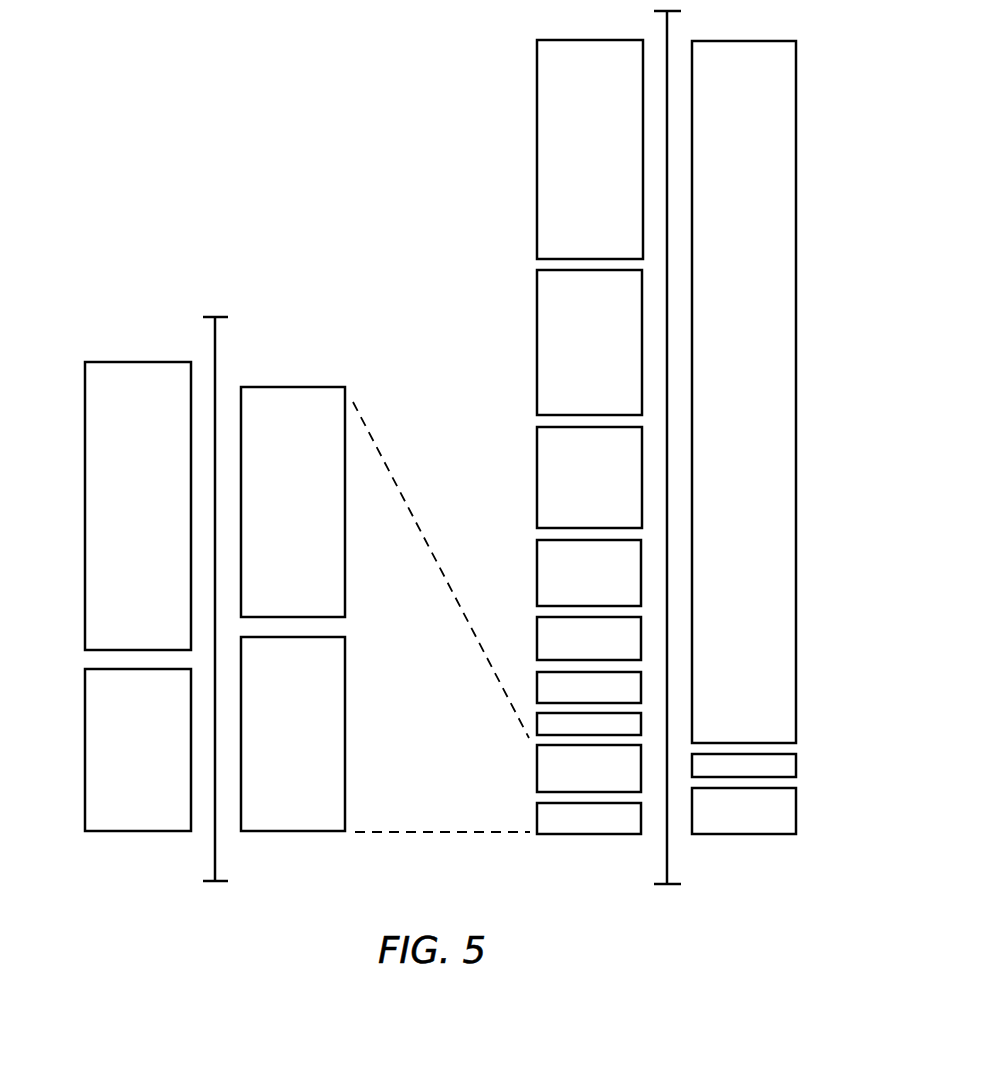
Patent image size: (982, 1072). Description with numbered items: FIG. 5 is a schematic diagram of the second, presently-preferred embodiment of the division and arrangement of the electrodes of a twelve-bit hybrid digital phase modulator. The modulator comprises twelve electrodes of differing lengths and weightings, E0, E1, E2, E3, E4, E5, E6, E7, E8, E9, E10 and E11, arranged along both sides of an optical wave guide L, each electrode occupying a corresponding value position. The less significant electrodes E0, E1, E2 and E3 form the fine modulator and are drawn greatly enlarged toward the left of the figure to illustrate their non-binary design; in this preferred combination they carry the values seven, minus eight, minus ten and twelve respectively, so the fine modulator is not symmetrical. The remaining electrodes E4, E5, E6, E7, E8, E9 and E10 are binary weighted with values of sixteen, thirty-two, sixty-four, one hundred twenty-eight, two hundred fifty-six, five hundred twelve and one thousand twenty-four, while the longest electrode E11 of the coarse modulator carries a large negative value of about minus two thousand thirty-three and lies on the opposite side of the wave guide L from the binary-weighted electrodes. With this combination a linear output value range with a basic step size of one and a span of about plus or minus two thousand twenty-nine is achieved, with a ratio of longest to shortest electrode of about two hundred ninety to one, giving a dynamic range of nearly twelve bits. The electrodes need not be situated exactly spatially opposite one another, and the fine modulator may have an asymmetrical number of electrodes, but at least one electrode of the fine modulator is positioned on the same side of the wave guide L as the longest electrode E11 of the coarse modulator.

The optical wave guide L is at (215, 868).
The electrode E0 is at (85, 750).
The electrode E1 is at (345, 758).
The electrode E2 is at (345, 521).
The electrode E3 is at (85, 590).
The electrode E4 is at (537, 723).
The electrode E5 is at (537, 687).
The electrode E6 is at (537, 638).
The electrode E7 is at (537, 573).
The electrode E8 is at (537, 490).
The electrode E9 is at (537, 342).
The electrode E10 is at (537, 185).
The electrode E11 is at (796, 393).